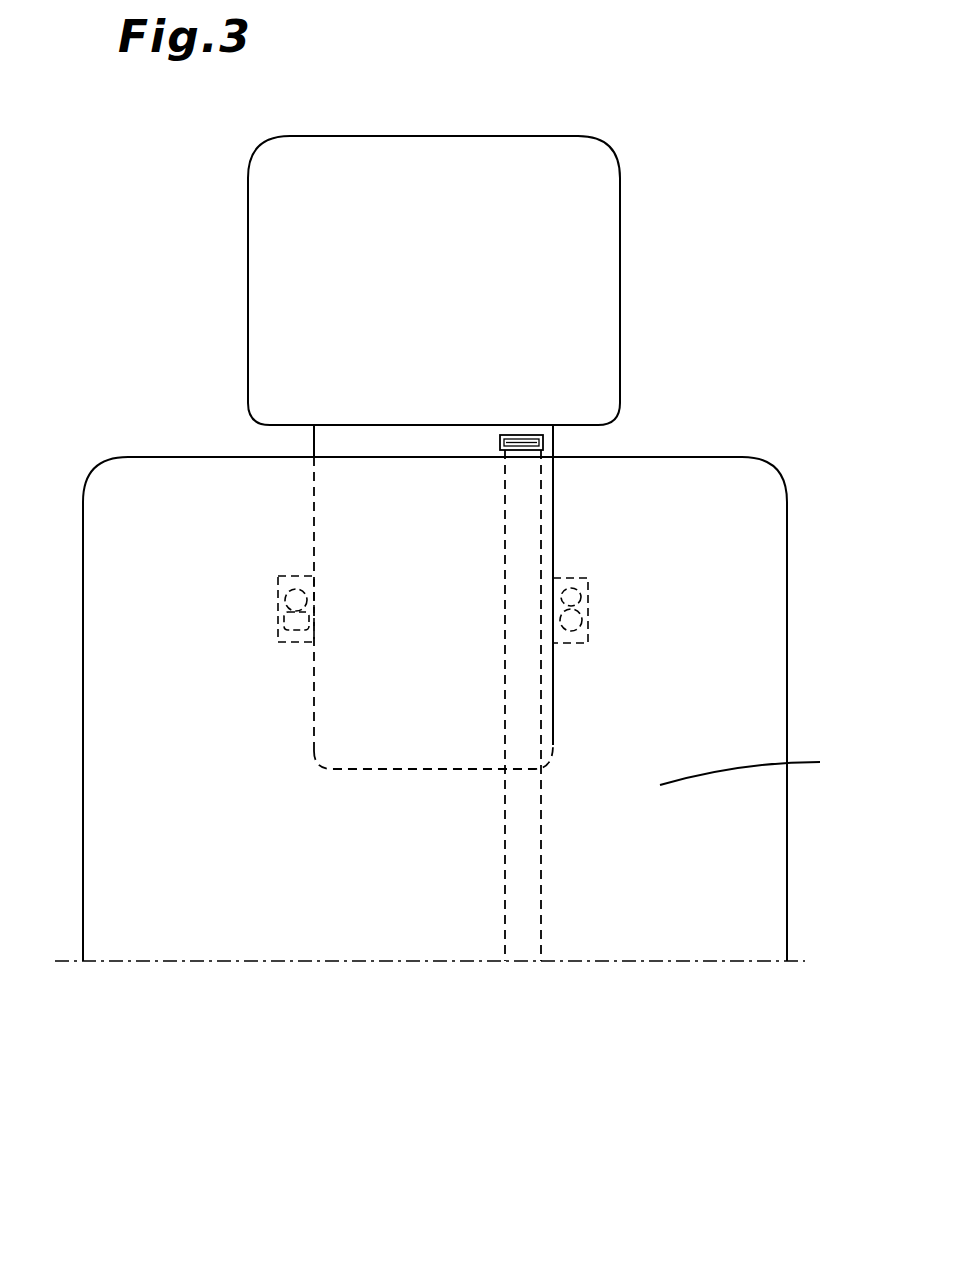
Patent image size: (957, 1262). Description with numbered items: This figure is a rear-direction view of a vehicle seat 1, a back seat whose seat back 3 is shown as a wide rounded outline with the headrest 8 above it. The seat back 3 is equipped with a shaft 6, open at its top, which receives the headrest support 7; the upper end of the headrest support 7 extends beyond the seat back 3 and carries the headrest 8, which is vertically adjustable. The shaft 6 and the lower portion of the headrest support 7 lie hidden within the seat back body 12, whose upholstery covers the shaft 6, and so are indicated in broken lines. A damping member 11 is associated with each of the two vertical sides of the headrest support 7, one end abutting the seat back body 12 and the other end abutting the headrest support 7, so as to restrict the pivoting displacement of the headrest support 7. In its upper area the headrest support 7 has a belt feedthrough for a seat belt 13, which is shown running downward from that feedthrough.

The vehicle seat 1 is at (173, 984).
The seat back 3 is at (669, 925).
The shaft 6 is at (312, 553).
The headrest support 7 is at (547, 699).
The headrest 8 is at (544, 227).
The damping member 11 is at (285, 601).
The seat back body 12 is at (761, 767).
The seat belt 13 is at (527, 864).